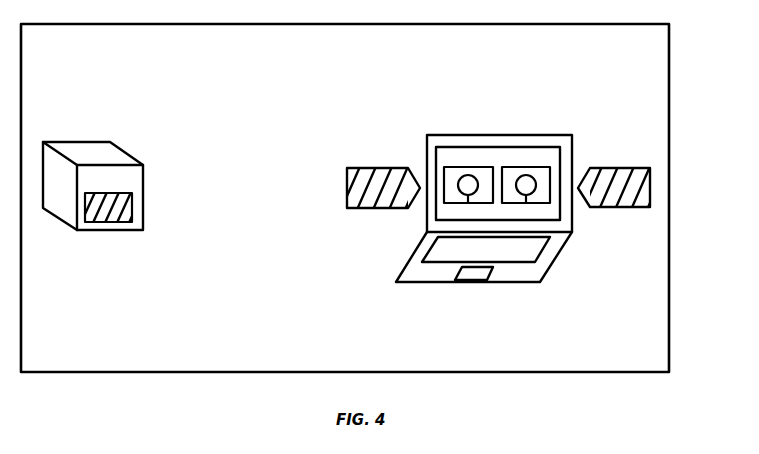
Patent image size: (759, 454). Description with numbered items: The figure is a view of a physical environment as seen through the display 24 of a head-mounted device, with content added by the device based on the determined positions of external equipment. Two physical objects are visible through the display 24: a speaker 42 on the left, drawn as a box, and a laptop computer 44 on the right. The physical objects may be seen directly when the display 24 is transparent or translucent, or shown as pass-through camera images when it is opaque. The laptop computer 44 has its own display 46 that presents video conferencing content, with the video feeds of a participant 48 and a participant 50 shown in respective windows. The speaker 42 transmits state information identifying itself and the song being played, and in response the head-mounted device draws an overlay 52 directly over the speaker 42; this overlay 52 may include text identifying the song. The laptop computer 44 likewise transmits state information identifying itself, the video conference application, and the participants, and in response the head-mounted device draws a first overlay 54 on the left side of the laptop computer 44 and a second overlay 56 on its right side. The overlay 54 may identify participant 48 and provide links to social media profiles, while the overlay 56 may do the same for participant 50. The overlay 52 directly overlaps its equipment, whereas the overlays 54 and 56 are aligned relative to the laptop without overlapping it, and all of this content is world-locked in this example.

The display 24 is at (669, 195).
The speaker 42 is at (82, 140).
The laptop computer 44 is at (420, 115).
The display 46 is at (498, 155).
The participant 48 is at (468, 175).
The participant 50 is at (526, 175).
The overlay 52 is at (130, 208).
The first overlay 54 is at (373, 170).
The second overlay 56 is at (608, 170).